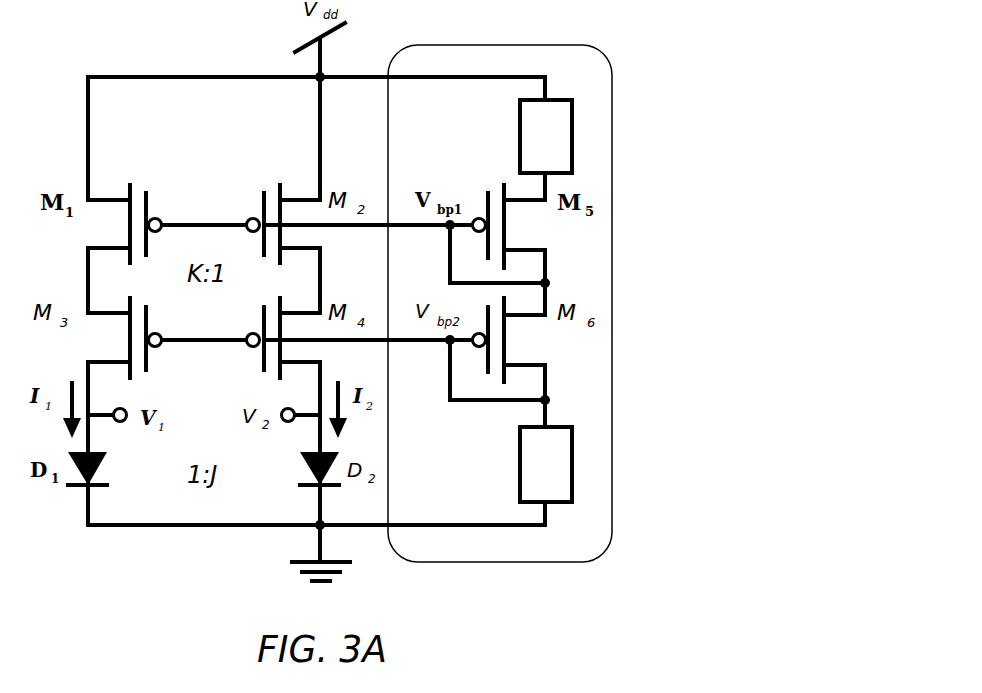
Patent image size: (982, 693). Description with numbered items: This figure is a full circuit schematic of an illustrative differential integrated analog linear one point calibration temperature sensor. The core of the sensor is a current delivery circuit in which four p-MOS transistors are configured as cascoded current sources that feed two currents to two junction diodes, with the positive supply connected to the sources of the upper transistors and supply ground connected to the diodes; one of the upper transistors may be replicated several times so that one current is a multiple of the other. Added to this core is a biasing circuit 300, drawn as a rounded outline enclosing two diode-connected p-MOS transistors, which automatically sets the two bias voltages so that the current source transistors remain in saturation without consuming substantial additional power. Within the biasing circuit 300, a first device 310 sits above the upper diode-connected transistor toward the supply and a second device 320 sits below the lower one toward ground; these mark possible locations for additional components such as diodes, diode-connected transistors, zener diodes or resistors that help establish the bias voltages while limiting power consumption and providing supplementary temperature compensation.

The biasing circuit 300 is at (577, 45).
The device Z1 310 is at (572, 133).
The device Z2 320 is at (572, 468).